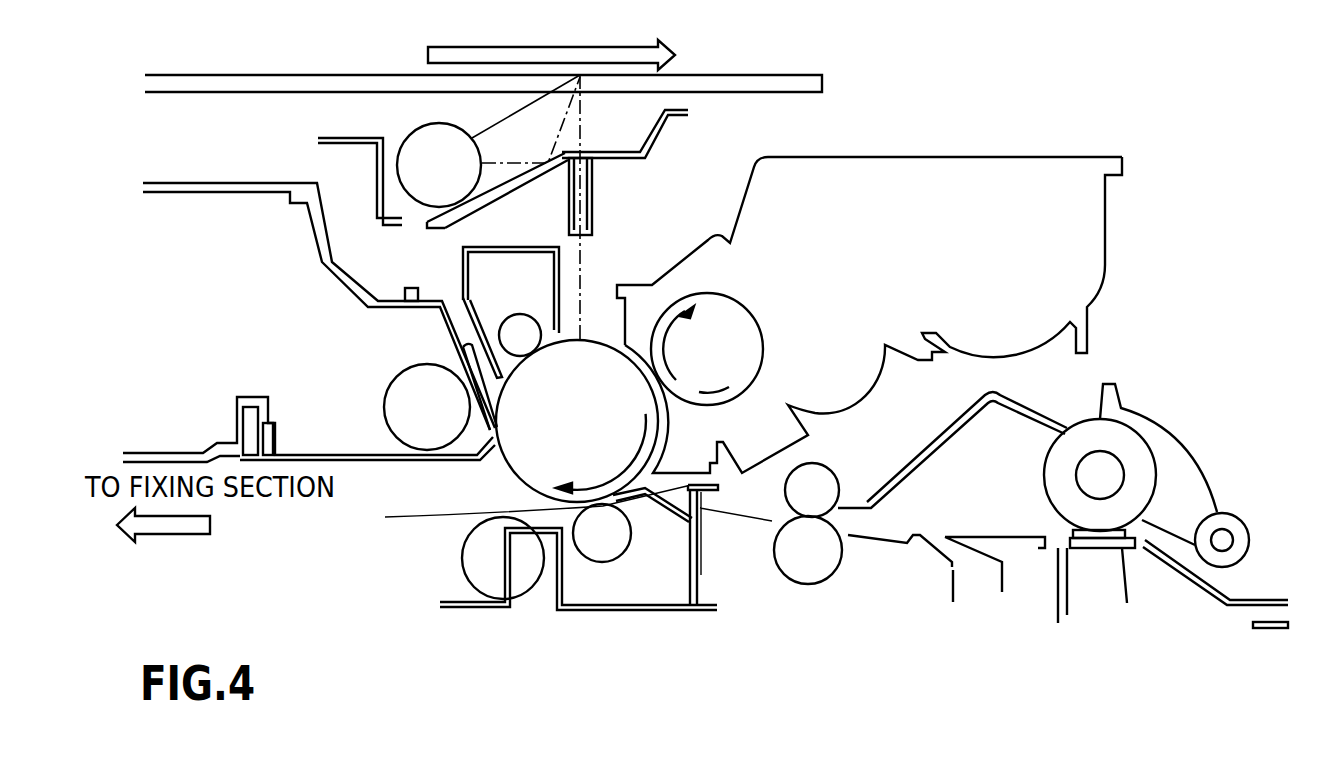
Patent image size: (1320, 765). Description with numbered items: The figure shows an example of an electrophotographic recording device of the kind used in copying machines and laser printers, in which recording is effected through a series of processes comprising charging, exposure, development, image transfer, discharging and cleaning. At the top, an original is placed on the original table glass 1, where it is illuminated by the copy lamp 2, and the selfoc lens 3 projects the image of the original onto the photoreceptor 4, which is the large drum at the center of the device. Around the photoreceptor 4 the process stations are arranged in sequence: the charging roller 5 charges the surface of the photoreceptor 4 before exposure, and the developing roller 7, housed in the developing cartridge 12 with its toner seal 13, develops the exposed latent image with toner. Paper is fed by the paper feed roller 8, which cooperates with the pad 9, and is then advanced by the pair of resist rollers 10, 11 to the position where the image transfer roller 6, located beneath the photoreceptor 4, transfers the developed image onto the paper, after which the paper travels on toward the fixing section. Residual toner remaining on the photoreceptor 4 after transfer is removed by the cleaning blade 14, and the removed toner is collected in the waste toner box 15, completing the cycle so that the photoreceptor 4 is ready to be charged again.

The original table glass 1 is at (343, 78).
The copy lamp 2 is at (418, 135).
The selfoc lens 3 is at (592, 196).
The photoreceptor 4 is at (553, 404).
The charging roller 5 is at (507, 338).
The image transfer roller 6 is at (611, 545).
The developing roller 7 is at (737, 314).
The paper feed roller 8 is at (1123, 448).
The pad 9 is at (1070, 522).
The resist roller 10 is at (825, 481).
The resist roller 11 is at (828, 558).
The developing cartridge 12 is at (967, 177).
The toner seal 13 is at (727, 372).
The cleaning blade 14 is at (470, 378).
The waste toner box 15 is at (200, 180).